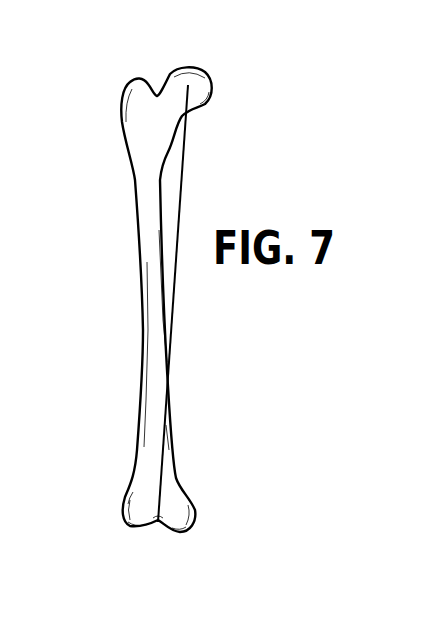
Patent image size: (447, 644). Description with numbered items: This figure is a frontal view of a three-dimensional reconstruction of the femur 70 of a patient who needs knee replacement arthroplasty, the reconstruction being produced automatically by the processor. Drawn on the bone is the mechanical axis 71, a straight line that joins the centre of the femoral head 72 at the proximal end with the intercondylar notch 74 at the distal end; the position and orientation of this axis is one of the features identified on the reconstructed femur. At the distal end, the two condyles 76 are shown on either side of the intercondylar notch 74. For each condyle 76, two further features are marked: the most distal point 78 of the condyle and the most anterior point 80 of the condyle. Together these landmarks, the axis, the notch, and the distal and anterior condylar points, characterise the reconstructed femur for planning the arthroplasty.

The femur 70 is at (128, 292).
The mechanical axis 71 is at (185, 155).
The femoral head 72 is at (197, 82).
The intercondylar notch 74 is at (159, 525).
The condyle 76 is at (138, 510).
The most distal point 78 is at (130, 527).
The most anterior point 80 is at (140, 500).